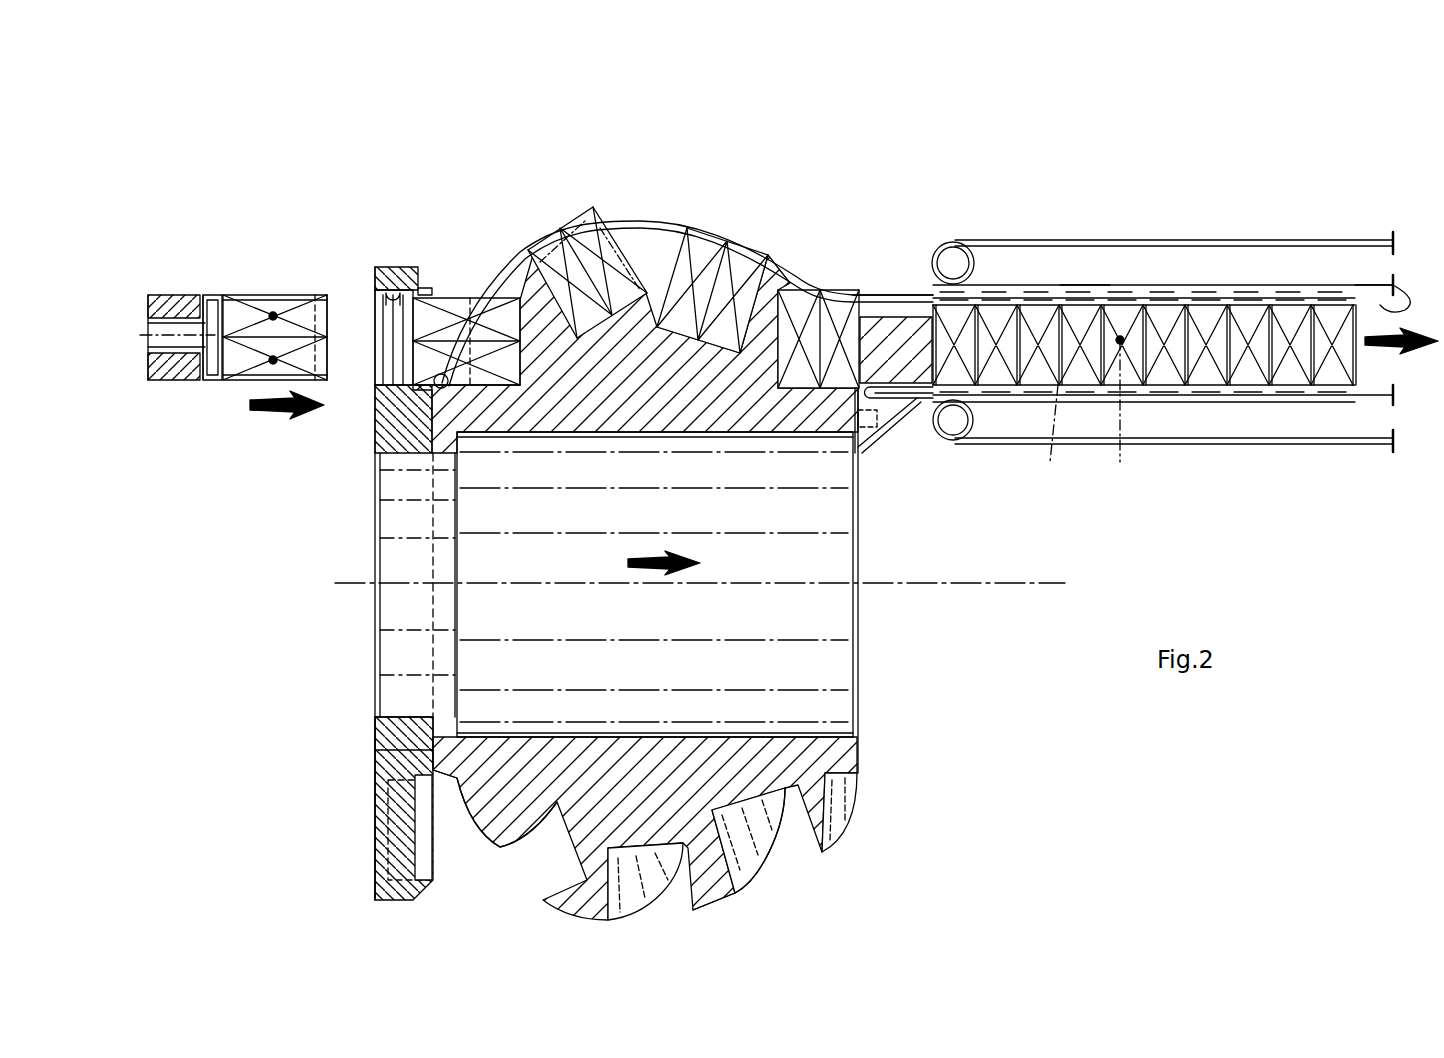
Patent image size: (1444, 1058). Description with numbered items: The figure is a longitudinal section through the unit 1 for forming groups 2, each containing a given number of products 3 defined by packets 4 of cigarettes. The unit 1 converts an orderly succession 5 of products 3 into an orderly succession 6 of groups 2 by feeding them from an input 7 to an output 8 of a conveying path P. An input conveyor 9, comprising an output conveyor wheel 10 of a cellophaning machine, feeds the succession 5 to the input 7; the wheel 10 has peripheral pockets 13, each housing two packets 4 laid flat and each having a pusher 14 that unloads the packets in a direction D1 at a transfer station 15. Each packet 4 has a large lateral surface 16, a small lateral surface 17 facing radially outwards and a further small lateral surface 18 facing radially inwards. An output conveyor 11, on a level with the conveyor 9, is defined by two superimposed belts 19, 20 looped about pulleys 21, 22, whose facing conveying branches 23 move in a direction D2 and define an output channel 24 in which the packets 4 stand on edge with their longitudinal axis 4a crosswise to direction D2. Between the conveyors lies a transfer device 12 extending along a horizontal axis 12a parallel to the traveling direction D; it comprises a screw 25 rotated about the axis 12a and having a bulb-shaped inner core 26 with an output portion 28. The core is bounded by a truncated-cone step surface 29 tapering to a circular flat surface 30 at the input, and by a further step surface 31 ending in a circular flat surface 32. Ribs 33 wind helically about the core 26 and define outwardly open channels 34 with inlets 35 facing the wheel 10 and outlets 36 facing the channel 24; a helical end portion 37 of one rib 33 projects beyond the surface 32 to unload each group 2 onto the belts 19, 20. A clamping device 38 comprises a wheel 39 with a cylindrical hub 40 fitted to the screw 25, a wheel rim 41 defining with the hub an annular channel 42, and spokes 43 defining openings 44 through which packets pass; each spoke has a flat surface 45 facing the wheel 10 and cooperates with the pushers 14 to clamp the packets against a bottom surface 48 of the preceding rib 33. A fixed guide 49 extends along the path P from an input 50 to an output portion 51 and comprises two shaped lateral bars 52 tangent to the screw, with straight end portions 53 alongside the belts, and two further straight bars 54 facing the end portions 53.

The unit 1 is at (1253, 145).
The group 2 is at (1146, 397).
The product 3 is at (242, 378).
The packet of cigarettes 4 is at (252, 296).
The longitudinal axis of packets 4a is at (280, 314).
The orderly succession of products 5 is at (213, 296).
The orderly succession of groups 6 is at (1258, 245).
The input of conveying path 7 is at (490, 262).
The output of conveying path 8 is at (1014, 243).
The input conveyor 9 is at (158, 386).
The output conveyor wheel 10 is at (172, 300).
The output conveyor 11 is at (1203, 215).
The transfer device 12 is at (558, 930).
The horizontal axis 12a is at (1004, 584).
The peripheral pocket 13 is at (225, 300).
The pusher 14 is at (158, 338).
The transfer station 15 is at (344, 292).
The large lateral surface 16 is at (280, 300).
The small lateral surface 17 is at (326, 356).
The further small lateral surface 18 is at (207, 360).
The conveyor belt 19 is at (985, 243).
The conveyor belt 20 is at (996, 444).
The pulley 21 is at (953, 262).
The pulley 22 is at (470, 297).
The conveying branch 23 is at (1150, 300).
The output channel 24 is at (1400, 282).
The screw 25 is at (728, 906).
The inner core 26 is at (826, 434).
The output portion 28 is at (770, 265).
The step surface 29 is at (550, 846).
The circular flat surface 30 is at (430, 756).
The step surface 31 is at (767, 802).
The circular flat surface 32 is at (863, 770).
The rib 33 is at (712, 902).
The channel 34 is at (682, 876).
The inlet 35 is at (470, 278).
The outlet 36 is at (863, 400).
The helical end portion 37 is at (894, 350).
The clamping device 38 is at (400, 268).
The wheel 39 is at (378, 800).
The cylindrical hub 40 is at (378, 742).
The wheel rim 41 is at (395, 893).
The annular channel 42 is at (378, 300).
The spoke 43 is at (395, 850).
The opening 44 is at (393, 294).
The flat surface 45 is at (378, 832).
The bottom surface 48 is at (445, 374).
The fixed guide 49 is at (622, 222).
The input of guide 50 is at (468, 272).
The output portion of guide 51 is at (1296, 285).
The shaped lateral bar 52 is at (800, 330).
The straight end portion 53 is at (1110, 304).
The straight bar 54 is at (1320, 402).
The conveying path P is at (657, 222).
The traveling direction D is at (668, 557).
The unloading direction D1 is at (280, 416).
The belt direction D2 is at (1408, 338).